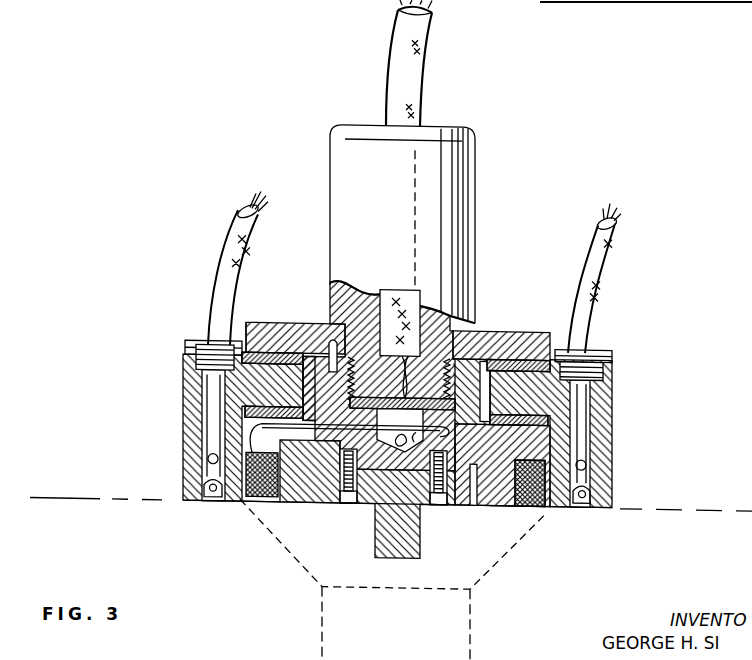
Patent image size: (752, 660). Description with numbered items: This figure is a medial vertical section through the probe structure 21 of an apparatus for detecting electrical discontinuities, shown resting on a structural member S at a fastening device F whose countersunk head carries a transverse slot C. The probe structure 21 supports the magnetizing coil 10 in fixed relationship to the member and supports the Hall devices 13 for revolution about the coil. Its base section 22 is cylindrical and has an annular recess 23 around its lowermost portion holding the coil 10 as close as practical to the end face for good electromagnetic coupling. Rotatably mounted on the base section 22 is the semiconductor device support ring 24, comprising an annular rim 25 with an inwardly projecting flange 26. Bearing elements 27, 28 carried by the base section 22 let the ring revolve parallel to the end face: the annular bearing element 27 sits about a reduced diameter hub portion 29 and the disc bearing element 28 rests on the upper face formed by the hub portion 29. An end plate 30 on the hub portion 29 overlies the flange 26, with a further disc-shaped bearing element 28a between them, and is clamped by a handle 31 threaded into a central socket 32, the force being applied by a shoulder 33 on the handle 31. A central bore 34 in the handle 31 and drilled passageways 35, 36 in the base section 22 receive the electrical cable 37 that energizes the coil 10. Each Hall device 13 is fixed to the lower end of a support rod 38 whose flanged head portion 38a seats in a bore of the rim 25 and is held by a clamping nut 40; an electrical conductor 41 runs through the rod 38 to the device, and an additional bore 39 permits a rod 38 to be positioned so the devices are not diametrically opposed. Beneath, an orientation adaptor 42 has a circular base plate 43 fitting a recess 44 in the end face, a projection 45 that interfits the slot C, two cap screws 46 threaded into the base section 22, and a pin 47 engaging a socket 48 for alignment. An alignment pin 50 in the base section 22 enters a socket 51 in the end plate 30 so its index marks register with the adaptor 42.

The magnetizing coil 10 is at (262, 502).
The semiconductor devices 13 is at (213, 500).
The probe structure 21 is at (498, 245).
The base section 22 is at (510, 506).
The annular recess 23 is at (480, 578).
The semiconductor device support ring 24 is at (614, 497).
The annular rim 25 is at (614, 412).
The annularly shaped flange 26 is at (520, 372).
The bearing element 27 is at (302, 340).
The bearing element 28 is at (502, 460).
The disc-shaped bearing element 28a is at (546, 346).
The hub portion 29 is at (482, 360).
The end plate 30 is at (257, 324).
The handle 31 is at (470, 170).
The central socket 32 is at (436, 410).
The shoulder 33 is at (478, 332).
The central bore 34 is at (388, 292).
The drilled passageway 35 is at (420, 434).
The drilled passageway 36 is at (288, 421).
The electrical cable 37 is at (422, 75).
The support rod 38 is at (183, 401).
The flanged head portion 38a is at (196, 360).
The additional bore 39 is at (207, 462).
The clamping nut 40 is at (190, 345).
The electrical conductor 41 is at (228, 262).
The orientation adaptor 42 is at (424, 542).
The circular base plate 43 is at (470, 508).
The recess 44 is at (306, 504).
The projection 45 is at (406, 559).
The cap screws 46 is at (349, 505).
The pin 47 is at (312, 468).
The socket 48 is at (324, 505).
The alignment pin 50 is at (330, 348).
The socket 51 is at (333, 338).
The structural member S is at (98, 492).
The slot C is at (376, 545).
The fastening device F is at (320, 635).